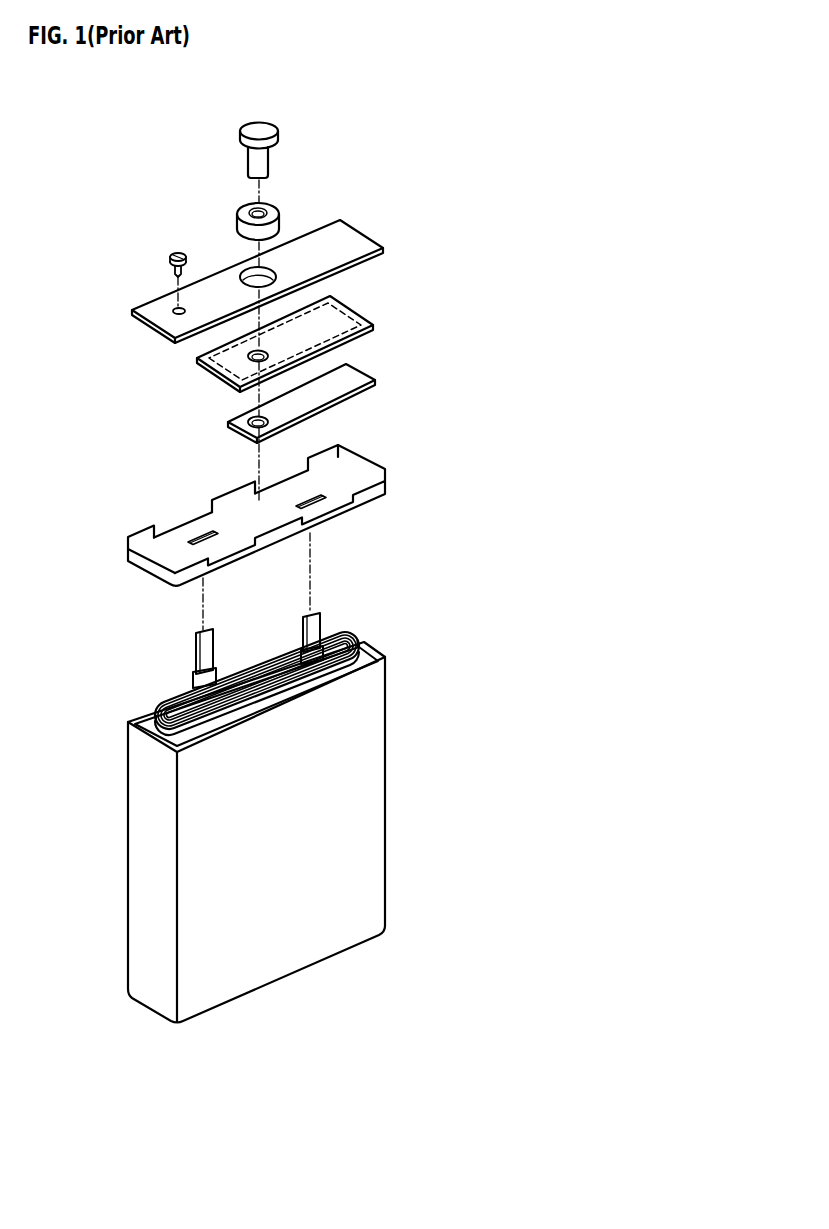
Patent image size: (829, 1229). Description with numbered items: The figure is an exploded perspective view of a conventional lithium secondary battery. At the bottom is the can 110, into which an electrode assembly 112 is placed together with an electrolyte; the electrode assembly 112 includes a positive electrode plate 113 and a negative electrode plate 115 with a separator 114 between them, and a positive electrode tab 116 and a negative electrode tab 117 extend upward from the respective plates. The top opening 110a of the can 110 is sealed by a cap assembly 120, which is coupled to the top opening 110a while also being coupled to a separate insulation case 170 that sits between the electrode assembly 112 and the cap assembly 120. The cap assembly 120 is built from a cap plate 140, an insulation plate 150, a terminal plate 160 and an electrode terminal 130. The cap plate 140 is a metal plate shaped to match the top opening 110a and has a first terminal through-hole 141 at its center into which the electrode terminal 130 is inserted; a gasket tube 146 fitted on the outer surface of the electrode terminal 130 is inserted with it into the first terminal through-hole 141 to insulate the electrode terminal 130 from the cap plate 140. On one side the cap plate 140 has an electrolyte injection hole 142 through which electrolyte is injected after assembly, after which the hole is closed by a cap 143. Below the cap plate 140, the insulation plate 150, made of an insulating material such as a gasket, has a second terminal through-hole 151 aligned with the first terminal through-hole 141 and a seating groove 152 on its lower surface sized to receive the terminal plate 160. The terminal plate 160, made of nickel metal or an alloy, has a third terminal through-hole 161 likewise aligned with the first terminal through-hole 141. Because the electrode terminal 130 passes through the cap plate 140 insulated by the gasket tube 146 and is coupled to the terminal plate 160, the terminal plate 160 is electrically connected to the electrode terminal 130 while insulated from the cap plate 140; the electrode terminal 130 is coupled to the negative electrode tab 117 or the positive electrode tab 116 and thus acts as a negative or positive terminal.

The can 110 is at (299, 824).
The top opening 110a is at (367, 658).
The electrode assembly 112 is at (285, 640).
The positive electrode plate 113 is at (357, 645).
The separator 114 is at (257, 681).
The negative electrode plate 115 is at (257, 680).
The positive electrode tab 116 is at (195, 664).
The negative electrode tab 117 is at (303, 632).
The cap assembly 120 is at (436, 122).
The electrode terminal 130 is at (263, 134).
The cap plate 140 is at (272, 276).
The first terminal through-hole 141 is at (247, 270).
The electrolyte injection hole 142 is at (175, 309).
The cap 143 is at (173, 255).
The gasket tube 146 is at (243, 214).
The insulation plate 150 is at (279, 352).
The second terminal through-hole 151 is at (225, 383).
The seating groove 152 is at (198, 367).
The terminal plate 160 is at (307, 406).
The third terminal through-hole 161 is at (242, 428).
The insulation case 170 is at (137, 556).